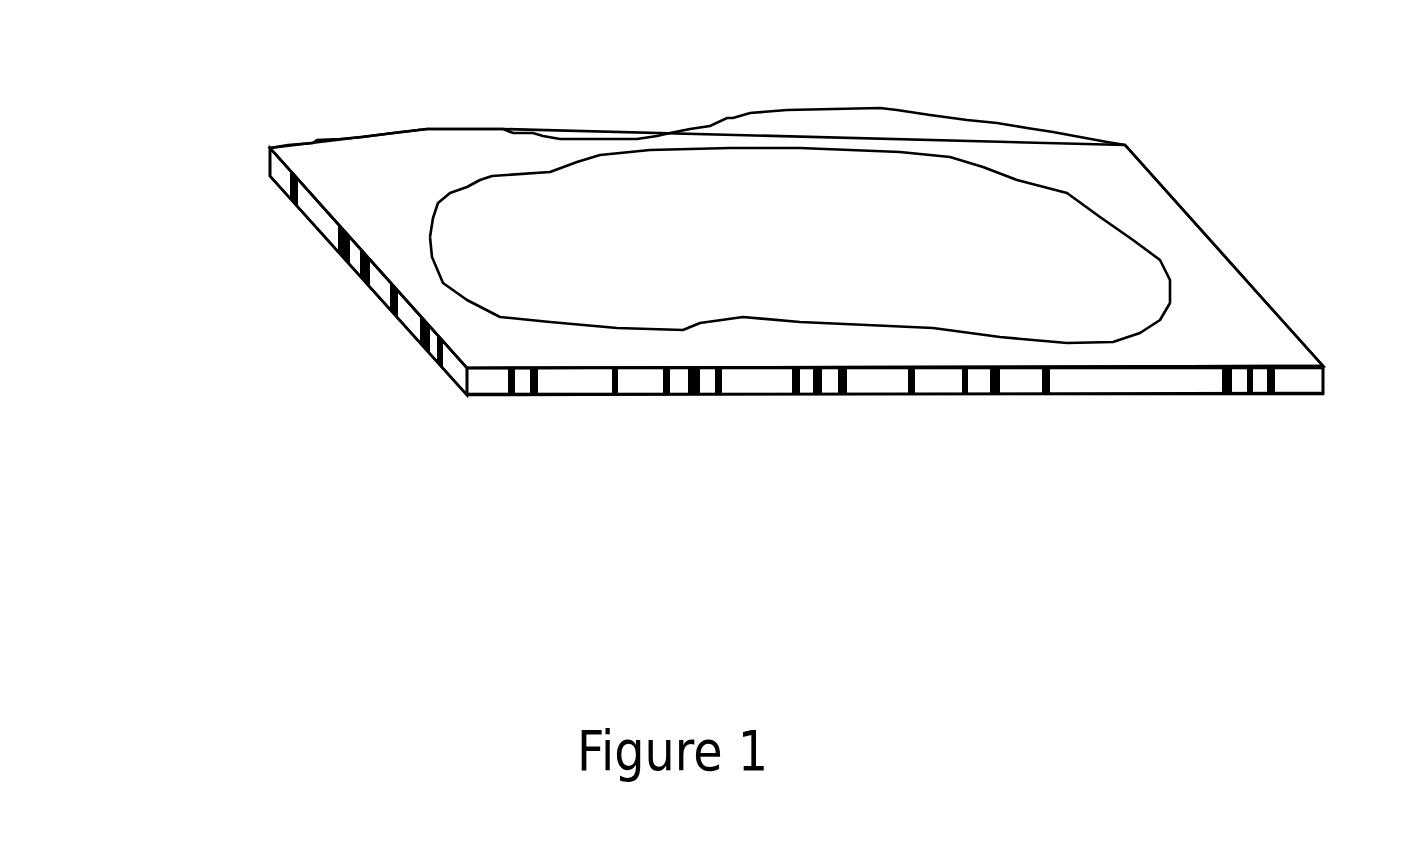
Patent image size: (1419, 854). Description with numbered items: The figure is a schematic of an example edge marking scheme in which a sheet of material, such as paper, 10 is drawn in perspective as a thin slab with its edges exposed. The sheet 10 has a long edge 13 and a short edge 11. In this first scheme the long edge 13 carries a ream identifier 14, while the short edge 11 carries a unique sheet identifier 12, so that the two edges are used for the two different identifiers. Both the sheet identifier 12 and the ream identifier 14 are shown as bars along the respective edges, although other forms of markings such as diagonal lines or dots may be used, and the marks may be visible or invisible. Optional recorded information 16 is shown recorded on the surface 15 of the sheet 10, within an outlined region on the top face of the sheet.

The sheet of material 10 is at (1160, 609).
The short edge 11 is at (312, 217).
The unique sheet identifier 12 is at (404, 338).
The long edge 13 is at (1115, 384).
The ream identifier 14 is at (892, 402).
The surface 15 is at (1215, 298).
The recorded information 16 is at (954, 212).